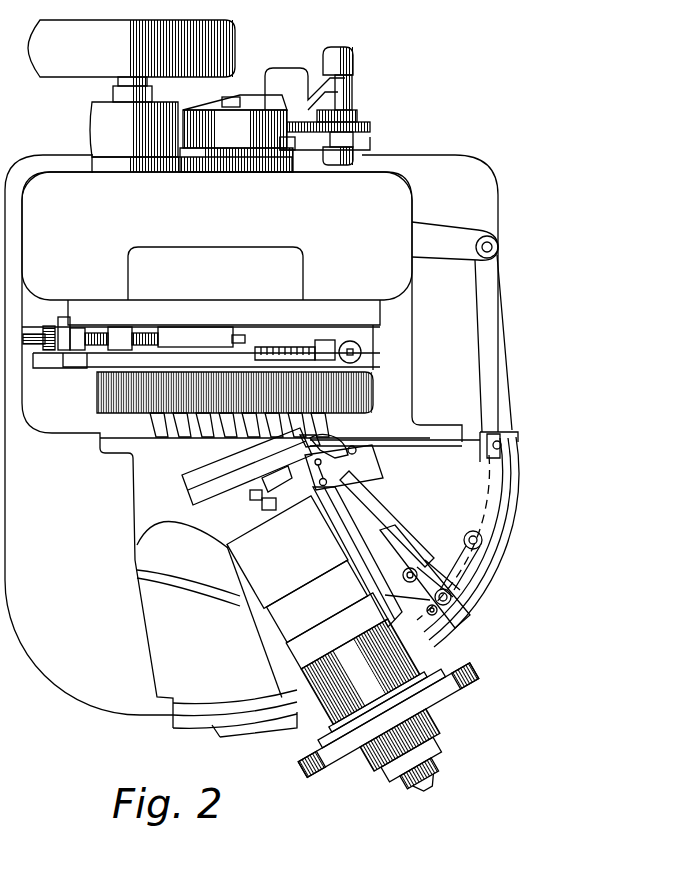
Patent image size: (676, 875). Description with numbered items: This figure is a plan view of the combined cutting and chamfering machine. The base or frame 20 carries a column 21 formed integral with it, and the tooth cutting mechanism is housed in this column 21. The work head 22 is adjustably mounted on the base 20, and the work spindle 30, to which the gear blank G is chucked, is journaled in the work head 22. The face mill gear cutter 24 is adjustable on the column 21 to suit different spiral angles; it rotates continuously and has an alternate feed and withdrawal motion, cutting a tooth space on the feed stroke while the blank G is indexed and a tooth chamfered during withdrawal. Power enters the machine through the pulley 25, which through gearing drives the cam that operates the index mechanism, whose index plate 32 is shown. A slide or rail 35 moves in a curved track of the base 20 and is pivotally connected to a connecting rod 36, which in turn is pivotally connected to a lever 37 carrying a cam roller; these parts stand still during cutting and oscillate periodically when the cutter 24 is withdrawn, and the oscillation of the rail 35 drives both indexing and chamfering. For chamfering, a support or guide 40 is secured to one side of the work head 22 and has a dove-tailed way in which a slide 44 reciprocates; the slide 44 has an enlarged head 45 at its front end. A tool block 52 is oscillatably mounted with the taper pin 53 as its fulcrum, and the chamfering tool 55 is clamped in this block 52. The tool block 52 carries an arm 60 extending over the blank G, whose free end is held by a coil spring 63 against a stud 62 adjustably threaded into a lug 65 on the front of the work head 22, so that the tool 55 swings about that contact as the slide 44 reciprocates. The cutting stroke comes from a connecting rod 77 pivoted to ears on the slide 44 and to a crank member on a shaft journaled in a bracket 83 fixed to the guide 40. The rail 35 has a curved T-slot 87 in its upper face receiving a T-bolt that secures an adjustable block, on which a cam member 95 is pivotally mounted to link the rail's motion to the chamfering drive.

The base or frame 20 is at (251, 446).
The column 21 is at (217, 249).
The work head 22 is at (257, 640).
The face mill gear cutter 24 is at (190, 432).
The pulley 25 is at (160, 96).
The work spindle 30 is at (298, 570).
The index plate 32 is at (473, 670).
The slide or rail 35 is at (512, 490).
The connecting rod 36 is at (500, 362).
The lever 37 is at (440, 230).
The support or guide 40 is at (345, 538).
The slide 44 is at (370, 525).
The enlarged head 45 is at (380, 472).
The tool-block 52 is at (335, 441).
The taper pin 53 is at (357, 450).
The chamfering tool 55 is at (318, 440).
The arm 60 is at (282, 490).
The stud 62 is at (255, 500).
The coil-spring 63 is at (338, 472).
The lug 65 is at (268, 511).
The connecting-rod 77 is at (423, 567).
The bracket 83 is at (398, 558).
The curved T-slot 87 is at (480, 483).
The cam member 95 is at (463, 587).
The gear blank G is at (195, 492).